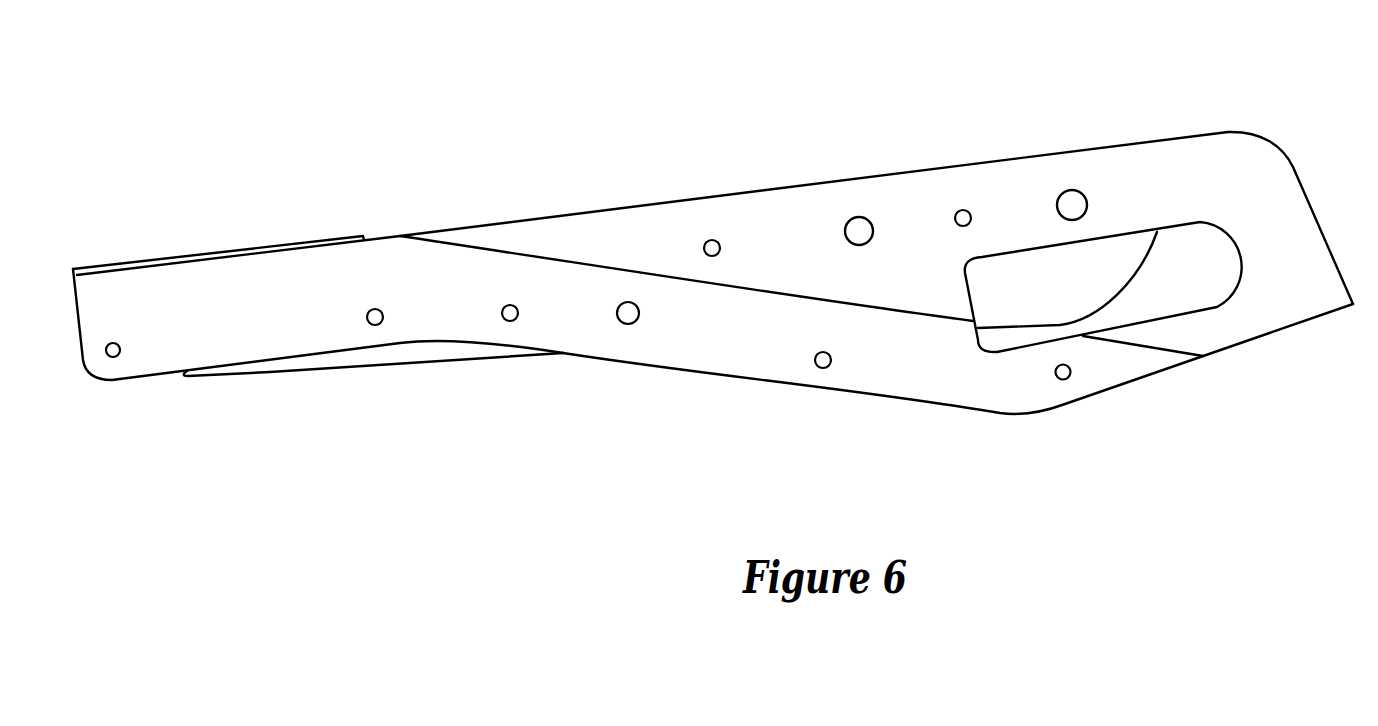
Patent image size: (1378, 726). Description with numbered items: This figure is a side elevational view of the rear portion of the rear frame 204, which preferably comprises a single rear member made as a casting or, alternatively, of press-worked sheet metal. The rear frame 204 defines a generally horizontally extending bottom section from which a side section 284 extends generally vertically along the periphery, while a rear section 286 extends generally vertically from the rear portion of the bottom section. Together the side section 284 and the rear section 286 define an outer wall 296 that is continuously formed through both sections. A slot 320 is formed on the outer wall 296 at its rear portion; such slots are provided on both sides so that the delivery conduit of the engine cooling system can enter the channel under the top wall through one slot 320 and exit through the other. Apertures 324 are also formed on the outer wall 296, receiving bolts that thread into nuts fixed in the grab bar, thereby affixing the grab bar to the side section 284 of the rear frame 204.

The rear frame 204 is at (960, 131).
The side section 284 is at (573, 278).
The rear section 286 is at (1288, 177).
The outer wall 296 is at (777, 253).
The slot 320 is at (1207, 293).
The aperture 324 is at (855, 228).